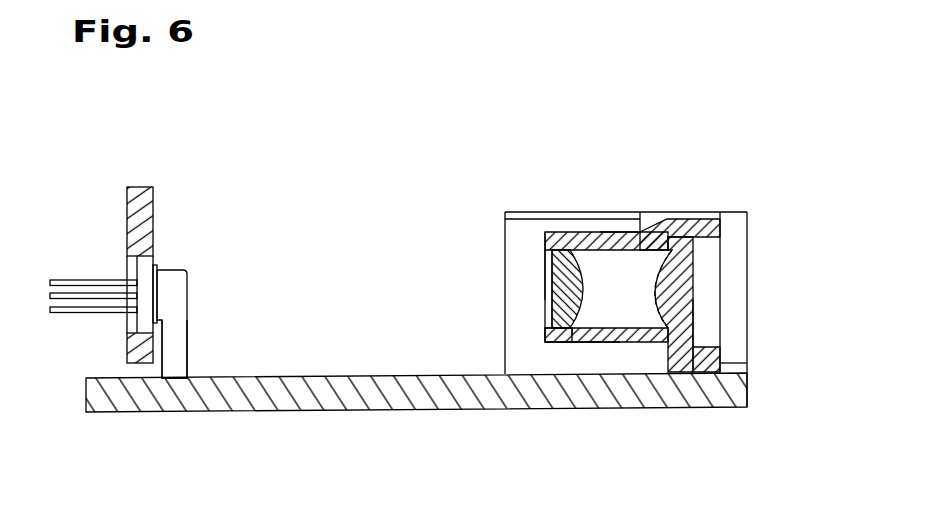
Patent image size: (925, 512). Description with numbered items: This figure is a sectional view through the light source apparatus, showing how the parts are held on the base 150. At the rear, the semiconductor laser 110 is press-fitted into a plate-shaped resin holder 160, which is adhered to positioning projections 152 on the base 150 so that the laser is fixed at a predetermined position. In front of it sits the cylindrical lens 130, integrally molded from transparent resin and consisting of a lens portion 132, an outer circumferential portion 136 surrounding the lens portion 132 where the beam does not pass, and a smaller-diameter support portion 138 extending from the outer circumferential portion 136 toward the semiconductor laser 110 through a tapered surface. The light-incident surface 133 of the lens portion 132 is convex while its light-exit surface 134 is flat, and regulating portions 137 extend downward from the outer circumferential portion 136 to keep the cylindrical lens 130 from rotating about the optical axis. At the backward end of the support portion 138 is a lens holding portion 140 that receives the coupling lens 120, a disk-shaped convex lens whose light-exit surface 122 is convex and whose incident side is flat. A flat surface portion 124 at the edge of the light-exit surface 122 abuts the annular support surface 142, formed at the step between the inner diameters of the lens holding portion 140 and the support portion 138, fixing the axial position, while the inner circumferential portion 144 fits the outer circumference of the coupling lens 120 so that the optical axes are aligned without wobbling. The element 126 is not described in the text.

The semiconductor laser 110 is at (172, 270).
The coupling lens 120 is at (538, 305).
The light-exit surface 122 is at (592, 297).
The flat surface portion 124 is at (584, 240).
The side wall of lens holder 126 is at (543, 278).
The cylindrical lens 130 is at (705, 213).
The lens portion 132 is at (700, 283).
The light-incident surface 133 is at (656, 300).
The light-exit surface 134 is at (693, 330).
The outer circumferential portion 136 is at (692, 228).
The regulating portions 137 is at (705, 365).
The support portion 138 is at (617, 240).
The lens holding portion 140 is at (546, 355).
The annular support surface 142 is at (567, 340).
The inner circumferential portion 144 is at (547, 325).
The base 150 is at (391, 412).
The positioning projections 152 is at (178, 350).
The holder 160 is at (140, 188).